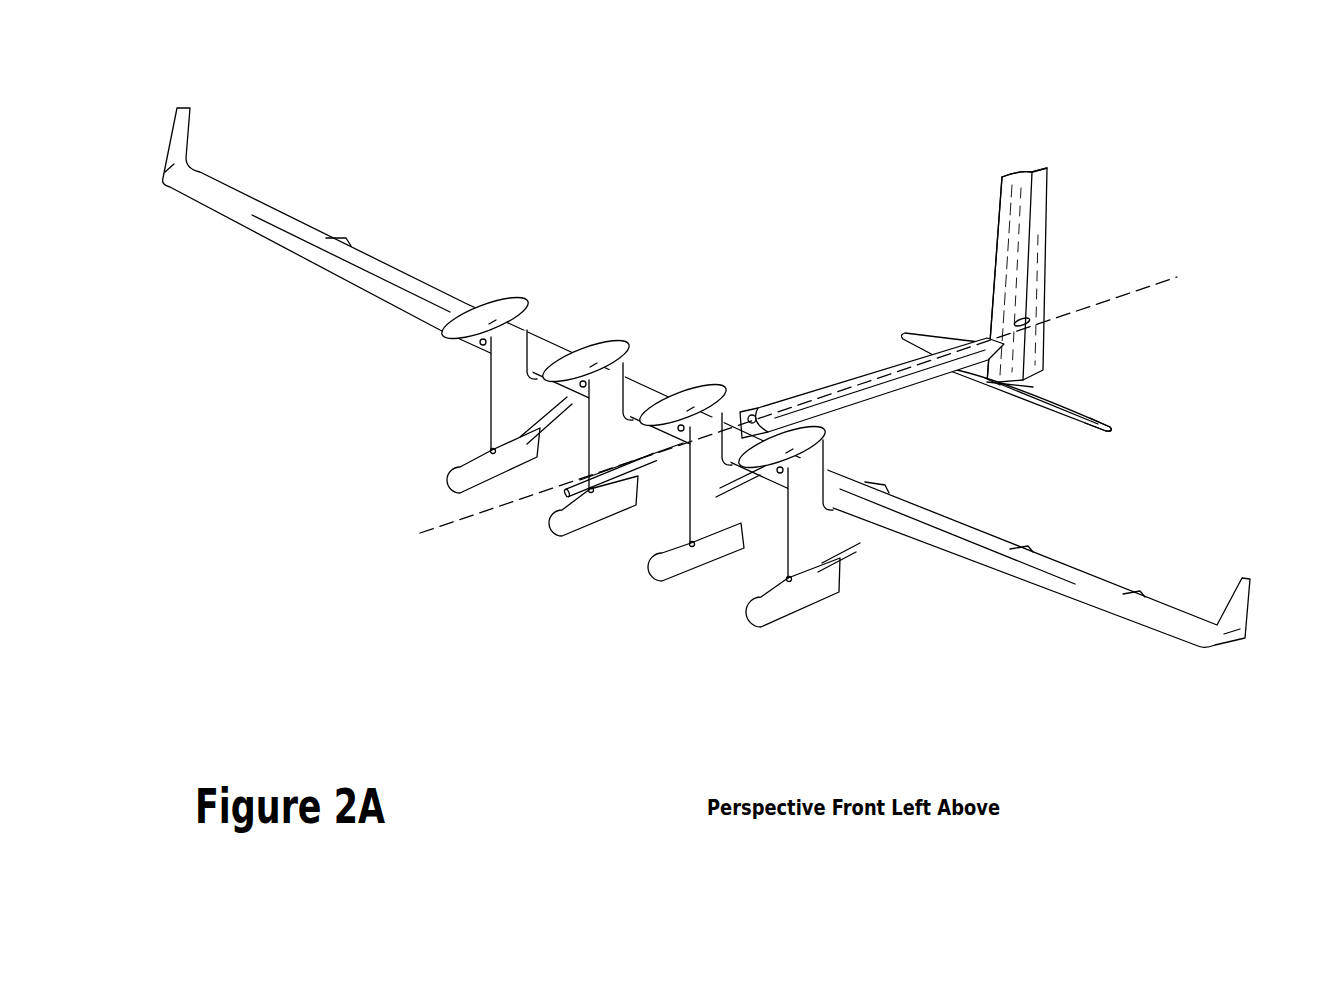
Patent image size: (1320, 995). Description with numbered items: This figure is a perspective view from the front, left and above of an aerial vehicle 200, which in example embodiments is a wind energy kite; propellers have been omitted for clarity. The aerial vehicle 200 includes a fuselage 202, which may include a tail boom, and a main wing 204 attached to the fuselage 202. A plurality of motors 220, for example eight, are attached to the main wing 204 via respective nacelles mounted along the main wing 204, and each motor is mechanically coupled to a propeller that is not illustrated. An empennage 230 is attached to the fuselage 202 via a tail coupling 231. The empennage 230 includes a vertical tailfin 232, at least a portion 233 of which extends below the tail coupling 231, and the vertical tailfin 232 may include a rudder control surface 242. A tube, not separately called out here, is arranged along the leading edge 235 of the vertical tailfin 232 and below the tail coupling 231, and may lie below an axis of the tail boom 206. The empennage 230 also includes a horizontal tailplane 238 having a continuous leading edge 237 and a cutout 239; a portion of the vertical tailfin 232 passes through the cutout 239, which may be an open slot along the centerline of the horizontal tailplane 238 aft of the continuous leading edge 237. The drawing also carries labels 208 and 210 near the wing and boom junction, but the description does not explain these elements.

The aerial vehicle 200 is at (1141, 120).
The fuselage 202 is at (847, 405).
The main wing 204 is at (987, 557).
The tail boom 206 is at (1142, 285).
The rotor hub 208 is at (683, 437).
The boom attachment 210 is at (732, 422).
The motors 220 is at (549, 523).
The empennage 230 is at (879, 285).
The tail coupling 231 is at (987, 340).
The vertical tailfin 232 is at (1013, 170).
The portion of the vertical tailfin 233 is at (997, 376).
The leading edge of the vertical tailfin 235 is at (993, 262).
The continuous leading edge 237 is at (1052, 415).
The horizontal tailplane 238 is at (1087, 423).
The cutout 239 is at (1033, 387).
The rudder control surface 242 is at (1047, 212).